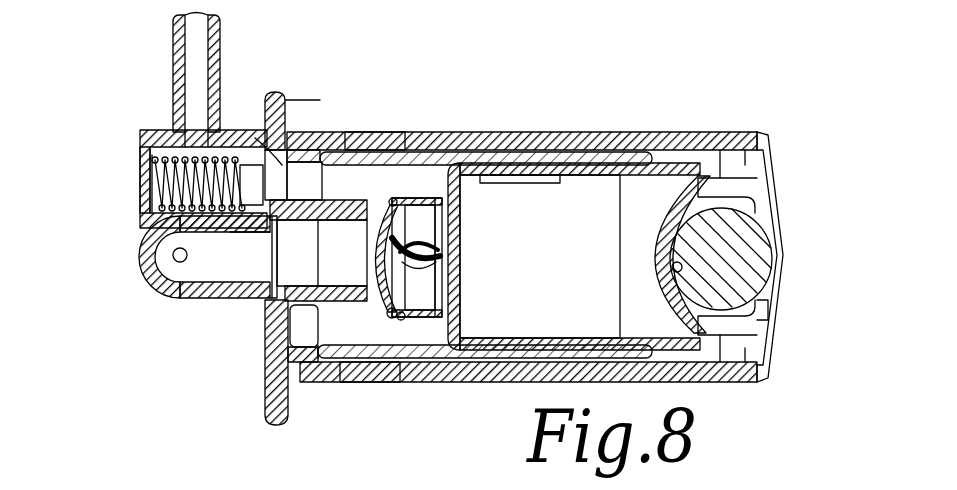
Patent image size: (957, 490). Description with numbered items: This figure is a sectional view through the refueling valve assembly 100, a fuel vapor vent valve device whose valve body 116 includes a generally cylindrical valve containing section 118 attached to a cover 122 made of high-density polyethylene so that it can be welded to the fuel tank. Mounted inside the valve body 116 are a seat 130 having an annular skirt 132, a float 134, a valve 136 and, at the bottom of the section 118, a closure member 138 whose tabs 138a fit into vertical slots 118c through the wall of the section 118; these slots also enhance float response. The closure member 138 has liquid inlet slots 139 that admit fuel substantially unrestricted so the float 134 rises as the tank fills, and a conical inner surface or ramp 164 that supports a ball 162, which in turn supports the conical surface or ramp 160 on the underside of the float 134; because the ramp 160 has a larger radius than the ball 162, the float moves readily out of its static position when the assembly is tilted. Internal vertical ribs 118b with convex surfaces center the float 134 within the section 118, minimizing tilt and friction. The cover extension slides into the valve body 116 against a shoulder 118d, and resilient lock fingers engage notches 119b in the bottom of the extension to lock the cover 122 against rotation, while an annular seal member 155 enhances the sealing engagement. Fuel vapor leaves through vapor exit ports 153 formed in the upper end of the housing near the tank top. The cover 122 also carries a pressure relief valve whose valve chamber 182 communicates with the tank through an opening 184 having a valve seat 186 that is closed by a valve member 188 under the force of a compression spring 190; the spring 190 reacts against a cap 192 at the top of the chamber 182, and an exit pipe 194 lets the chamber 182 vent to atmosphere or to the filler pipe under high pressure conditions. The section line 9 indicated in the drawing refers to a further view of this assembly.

The refueling valve assembly 100 is at (120, 148).
The section reference 9 is at (300, 127).
The valve body 116 is at (620, 138).
The valve containing section 118 is at (567, 147).
The vertical ribs 118b is at (450, 160).
The vertical slots 118c is at (705, 182).
The shoulder 118d is at (307, 380).
The notches 119b is at (320, 343).
The cover 122 is at (405, 233).
The seat 130 is at (417, 317).
The annular skirt 132 is at (430, 197).
The float 134 is at (517, 162).
The valve 136 is at (397, 322).
The closure member 138 is at (765, 145).
The tabs 138a is at (720, 173).
The liquid inlet slots 139 is at (775, 207).
The vapor exit ports 153 is at (377, 138).
The annular seal member 155 is at (273, 310).
The conical surface or ramp 160 is at (672, 270).
The ball 162 is at (753, 237).
The conical inner surface or ramp 164 is at (768, 310).
The valve chamber 182 is at (170, 147).
The opening 184 is at (300, 182).
The valve seat 186 is at (232, 143).
The valve member 188 is at (240, 230).
The compression spring 190 is at (160, 176).
The cap 192 is at (140, 200).
The exit pipe 194 is at (217, 33).